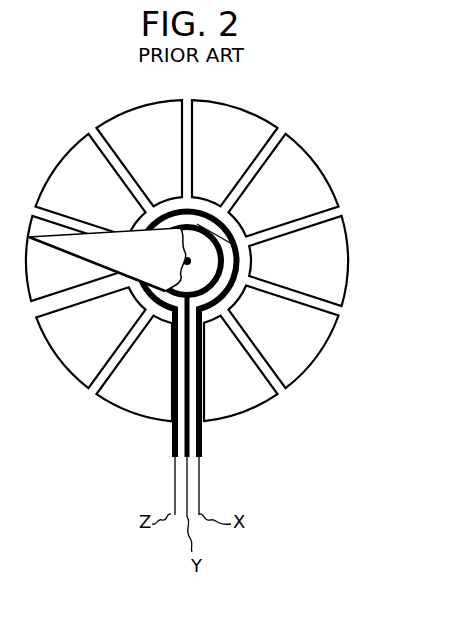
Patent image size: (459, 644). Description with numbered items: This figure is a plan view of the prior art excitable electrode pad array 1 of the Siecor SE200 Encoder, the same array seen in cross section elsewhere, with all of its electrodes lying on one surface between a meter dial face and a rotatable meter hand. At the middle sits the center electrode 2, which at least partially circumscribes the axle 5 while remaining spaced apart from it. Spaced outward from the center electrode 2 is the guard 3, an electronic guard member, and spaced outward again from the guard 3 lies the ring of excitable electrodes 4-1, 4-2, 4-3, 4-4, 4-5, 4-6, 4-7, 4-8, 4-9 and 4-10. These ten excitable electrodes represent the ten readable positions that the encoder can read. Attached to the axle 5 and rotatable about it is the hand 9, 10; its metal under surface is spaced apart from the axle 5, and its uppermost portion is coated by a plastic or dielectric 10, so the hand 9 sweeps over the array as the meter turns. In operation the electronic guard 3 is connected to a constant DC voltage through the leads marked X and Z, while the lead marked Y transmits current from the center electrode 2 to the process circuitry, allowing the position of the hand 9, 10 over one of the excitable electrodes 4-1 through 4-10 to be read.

The excitable electrode pad array 1 is at (384, 120).
The center electrode 2 is at (222, 207).
The guard 3 is at (244, 280).
The axle 5 is at (244, 242).
The excitable electrode 4-1 is at (204, 142).
The excitable electrode 4-2 is at (264, 200).
The excitable electrode 4-3 is at (290, 279).
The excitable electrode 4-4 is at (264, 352).
The excitable electrode 4-5 is at (204, 399).
The excitable electrode 4-6 is at (125, 399).
The excitable electrode 4-7 is at (62, 337).
The excitable electrode 4-8 is at (30, 279).
The excitable electrode 4-9 is at (64, 195).
The excitable electrode 4-10 is at (126, 149).
The hand 9 is at (107, 259).
The dielectric 10 is at (108, 262).